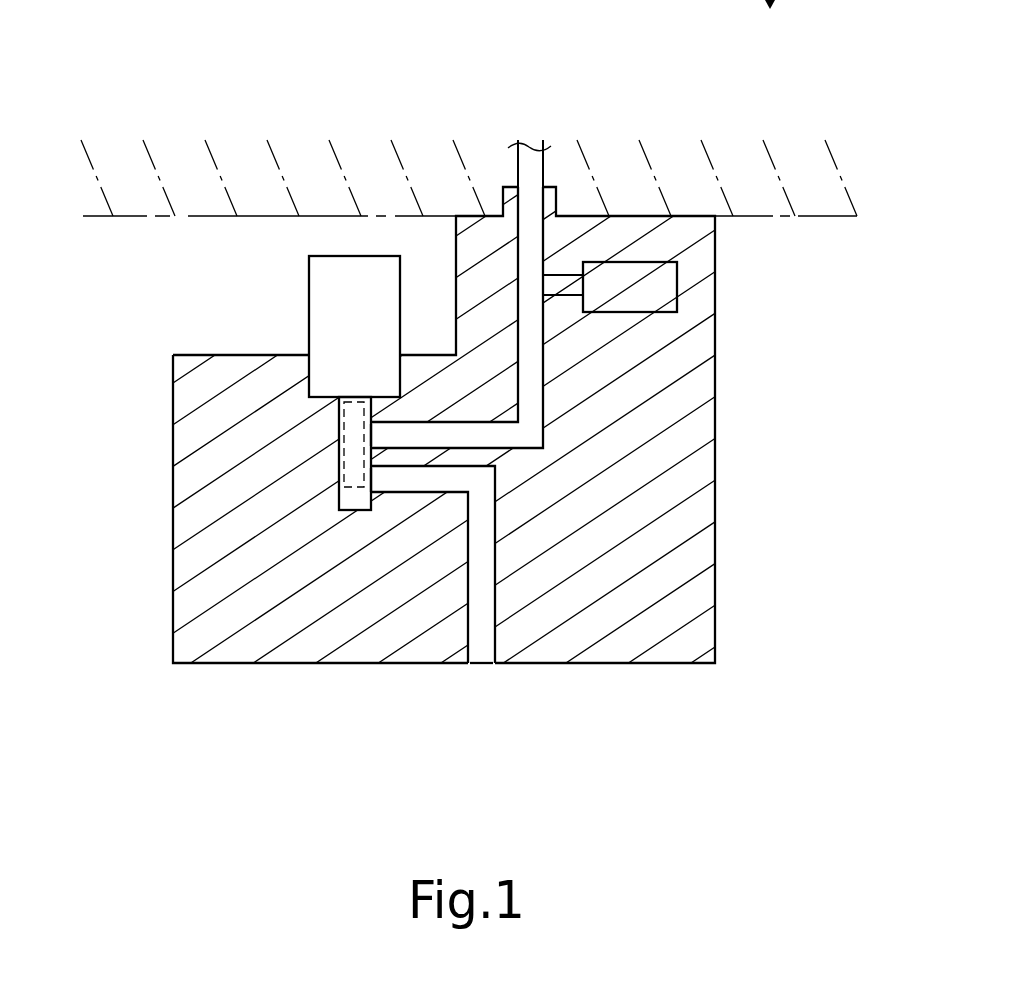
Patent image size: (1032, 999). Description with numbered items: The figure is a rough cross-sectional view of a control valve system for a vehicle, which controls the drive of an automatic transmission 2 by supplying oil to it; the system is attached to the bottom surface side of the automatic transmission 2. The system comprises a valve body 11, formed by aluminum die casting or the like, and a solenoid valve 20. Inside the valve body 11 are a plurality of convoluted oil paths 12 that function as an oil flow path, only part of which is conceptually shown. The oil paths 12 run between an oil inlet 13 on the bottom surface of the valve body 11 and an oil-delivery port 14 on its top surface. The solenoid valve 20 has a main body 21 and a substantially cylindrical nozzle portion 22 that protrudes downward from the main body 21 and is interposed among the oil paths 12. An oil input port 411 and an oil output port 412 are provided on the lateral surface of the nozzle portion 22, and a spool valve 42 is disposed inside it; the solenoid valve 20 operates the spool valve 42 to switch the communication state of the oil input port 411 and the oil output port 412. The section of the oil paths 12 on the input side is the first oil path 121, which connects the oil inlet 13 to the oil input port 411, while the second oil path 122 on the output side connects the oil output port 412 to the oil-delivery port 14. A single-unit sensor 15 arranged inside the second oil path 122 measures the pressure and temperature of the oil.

The automatic transmission 2 is at (123, 216).
The valve body 11 is at (200, 598).
The oil paths 12 is at (624, 425).
The first oil path 121 is at (480, 580).
The second oil path 122 is at (530, 391).
The oil inlet 13 is at (487, 680).
The oil-delivery port 14 is at (535, 172).
The sensor 15 is at (652, 285).
The solenoid valve 20 is at (277, 376).
The main body 21 is at (327, 292).
The nozzle portion 22 is at (340, 460).
The spool valve 42 is at (347, 478).
The oil input port 411 is at (389, 485).
The oil output port 412 is at (390, 440).